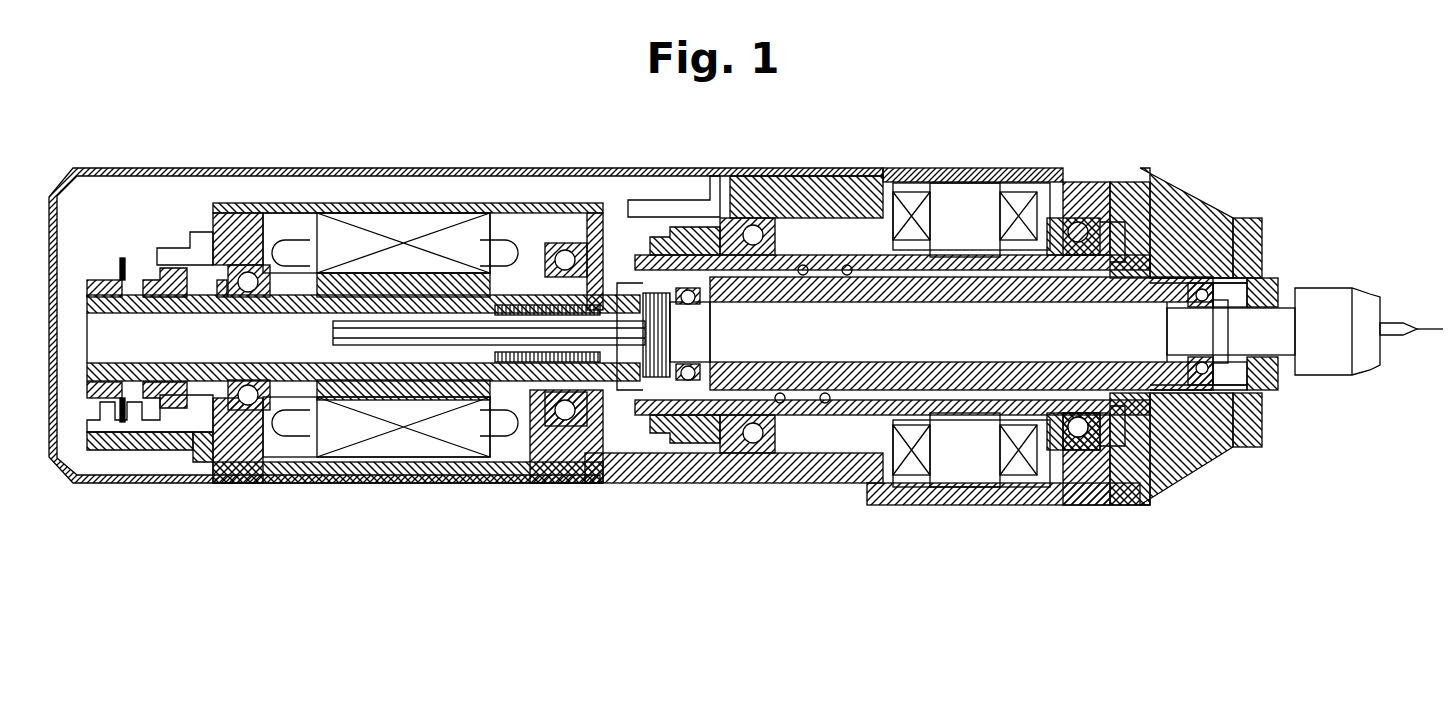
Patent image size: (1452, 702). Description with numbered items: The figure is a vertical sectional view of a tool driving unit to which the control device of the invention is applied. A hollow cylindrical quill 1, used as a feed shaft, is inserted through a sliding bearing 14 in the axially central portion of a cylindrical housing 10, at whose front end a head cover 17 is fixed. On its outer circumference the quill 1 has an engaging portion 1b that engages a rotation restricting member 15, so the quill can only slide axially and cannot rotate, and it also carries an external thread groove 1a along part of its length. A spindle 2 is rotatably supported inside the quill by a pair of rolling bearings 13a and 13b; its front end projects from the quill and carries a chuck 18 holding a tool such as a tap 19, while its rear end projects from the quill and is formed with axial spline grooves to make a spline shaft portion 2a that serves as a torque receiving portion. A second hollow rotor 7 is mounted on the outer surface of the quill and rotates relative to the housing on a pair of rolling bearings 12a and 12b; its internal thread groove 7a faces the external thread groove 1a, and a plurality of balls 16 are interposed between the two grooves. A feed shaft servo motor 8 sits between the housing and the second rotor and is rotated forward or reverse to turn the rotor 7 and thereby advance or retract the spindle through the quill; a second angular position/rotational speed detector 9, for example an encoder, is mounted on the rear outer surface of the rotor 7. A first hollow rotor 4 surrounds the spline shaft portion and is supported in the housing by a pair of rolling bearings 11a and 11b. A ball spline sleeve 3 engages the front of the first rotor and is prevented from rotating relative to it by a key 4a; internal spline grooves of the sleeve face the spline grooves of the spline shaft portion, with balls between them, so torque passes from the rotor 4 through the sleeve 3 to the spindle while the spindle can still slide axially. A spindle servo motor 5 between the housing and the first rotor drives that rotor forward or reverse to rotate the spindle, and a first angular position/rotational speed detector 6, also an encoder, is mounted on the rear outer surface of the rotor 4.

The hollow cylindrical quill 1 is at (783, 255).
The external thread groove 1a is at (885, 268).
The engaging portion 1b is at (1152, 272).
The spindle 2 is at (840, 330).
The spline shaft portion 2a is at (480, 325).
The ball spline sleeve 3 is at (510, 362).
The first hollow rotor 4 is at (407, 377).
The key 4a is at (543, 378).
The spindle servo motor 5 is at (397, 222).
The first angular position/rotational speed detector 6 is at (150, 277).
The second hollow rotor 7 is at (1050, 245).
The internal thread groove 7a is at (727, 232).
The feed shaft servo motor 8 is at (963, 200).
The second angular position/rotational speed detector 9 is at (697, 220).
The cylindrical housing 10 is at (1017, 505).
The rolling bearing 11a is at (248, 275).
The rolling bearing 11b is at (572, 255).
The rolling bearing 12a is at (753, 443).
The rolling bearing 12b is at (1078, 440).
The rolling bearing 13a is at (690, 380).
The rolling bearing 13b is at (1205, 395).
The sliding bearing 14 is at (1205, 235).
The rotation restricting member 15 is at (1245, 218).
The balls 16 is at (827, 403).
The head cover 17 is at (1170, 480).
The chuck 18 is at (1325, 288).
The tap 19 is at (1395, 340).